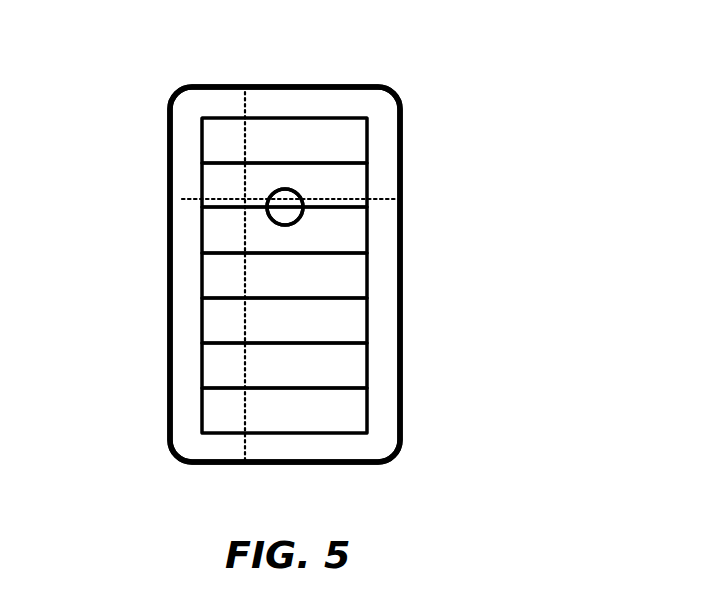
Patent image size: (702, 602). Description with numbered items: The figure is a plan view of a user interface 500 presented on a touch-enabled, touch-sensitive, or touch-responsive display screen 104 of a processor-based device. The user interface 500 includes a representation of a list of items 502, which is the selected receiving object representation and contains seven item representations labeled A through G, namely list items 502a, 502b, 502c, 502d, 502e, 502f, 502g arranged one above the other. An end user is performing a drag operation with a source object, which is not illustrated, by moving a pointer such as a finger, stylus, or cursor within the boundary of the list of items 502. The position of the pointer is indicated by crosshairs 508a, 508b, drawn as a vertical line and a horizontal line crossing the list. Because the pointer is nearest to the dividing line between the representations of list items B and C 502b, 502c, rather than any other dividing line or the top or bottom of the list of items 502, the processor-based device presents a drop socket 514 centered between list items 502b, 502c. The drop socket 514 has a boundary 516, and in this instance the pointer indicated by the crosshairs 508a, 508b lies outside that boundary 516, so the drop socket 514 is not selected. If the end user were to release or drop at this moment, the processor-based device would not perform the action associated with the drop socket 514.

The user interface 500 is at (203, 100).
The display screen 104 is at (402, 110).
The list of items 502 is at (327, 118).
The list item A 502a is at (352, 133).
The list item B 502b is at (353, 185).
The list item C 502c is at (352, 230).
The list item D 502d is at (350, 273).
The list item E 502e is at (350, 318).
The list item F 502f is at (355, 363).
The list item G 502g is at (355, 408).
The crosshair 508a is at (248, 102).
The crosshair 508b is at (187, 200).
The drop socket 514 is at (300, 193).
The boundary 516 is at (283, 189).